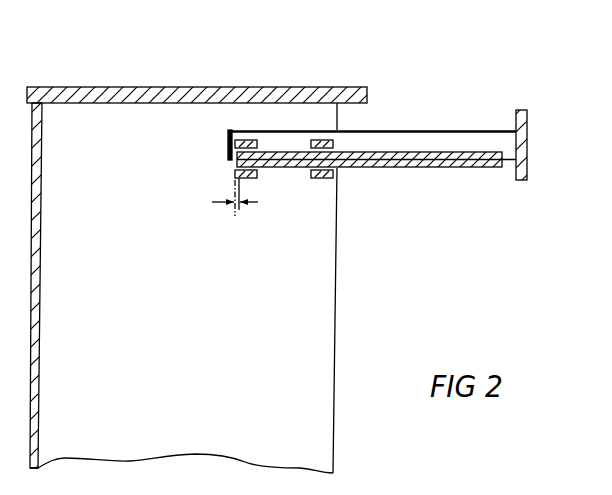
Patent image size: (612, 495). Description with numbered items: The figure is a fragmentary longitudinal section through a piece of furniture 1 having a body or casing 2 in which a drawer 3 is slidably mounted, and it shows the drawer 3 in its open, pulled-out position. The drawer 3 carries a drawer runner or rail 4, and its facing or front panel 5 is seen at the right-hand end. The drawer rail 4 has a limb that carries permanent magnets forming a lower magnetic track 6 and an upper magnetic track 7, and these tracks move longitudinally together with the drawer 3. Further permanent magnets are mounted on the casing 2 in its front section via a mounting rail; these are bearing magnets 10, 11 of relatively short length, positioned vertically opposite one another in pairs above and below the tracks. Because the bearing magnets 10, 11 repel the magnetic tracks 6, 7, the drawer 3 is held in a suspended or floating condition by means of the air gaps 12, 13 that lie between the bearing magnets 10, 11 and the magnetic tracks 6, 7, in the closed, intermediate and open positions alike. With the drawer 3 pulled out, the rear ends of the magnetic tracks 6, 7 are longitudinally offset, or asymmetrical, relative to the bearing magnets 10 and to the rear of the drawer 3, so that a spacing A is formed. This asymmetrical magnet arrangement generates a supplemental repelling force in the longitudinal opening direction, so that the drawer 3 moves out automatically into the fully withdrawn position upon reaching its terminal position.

The piece of furniture 1 is at (183, 288).
The body or casing 2 is at (280, 118).
The drawer 3 is at (428, 92).
The drawer runner or rail 4 is at (470, 147).
The facing or front panel 5 is at (528, 137).
The lower magnetic track 6 is at (408, 170).
The upper magnetic track 7 is at (447, 168).
The bearing magnet 10 is at (240, 139).
The bearing magnet 11 is at (316, 139).
The air gap 12 is at (236, 152).
The air gap 13 is at (234, 167).
The spacing A is at (235, 215).